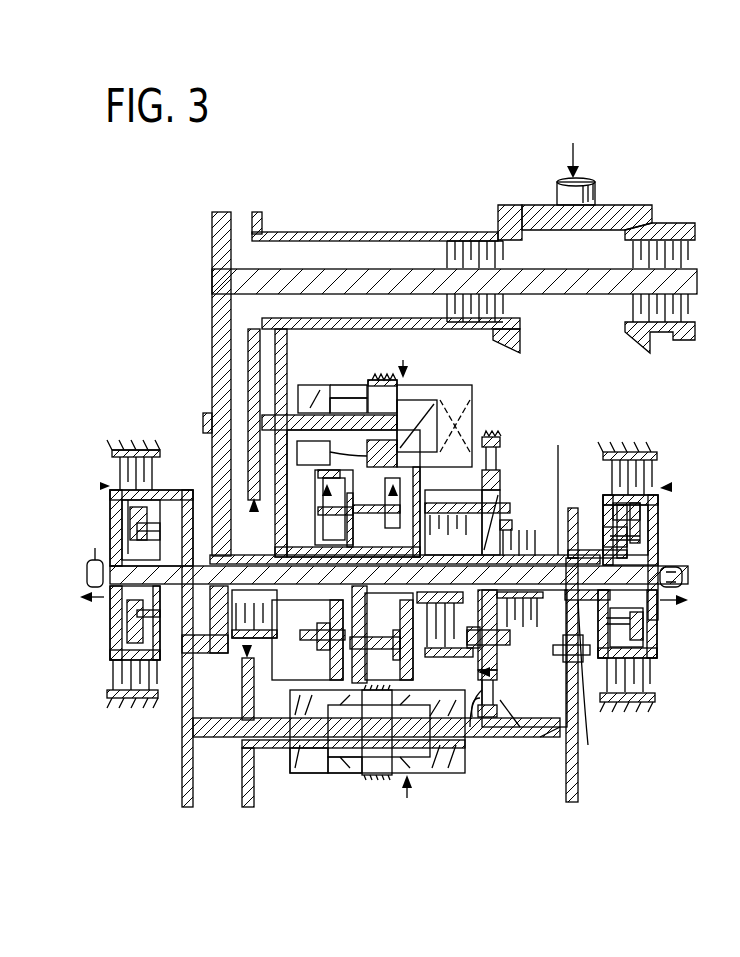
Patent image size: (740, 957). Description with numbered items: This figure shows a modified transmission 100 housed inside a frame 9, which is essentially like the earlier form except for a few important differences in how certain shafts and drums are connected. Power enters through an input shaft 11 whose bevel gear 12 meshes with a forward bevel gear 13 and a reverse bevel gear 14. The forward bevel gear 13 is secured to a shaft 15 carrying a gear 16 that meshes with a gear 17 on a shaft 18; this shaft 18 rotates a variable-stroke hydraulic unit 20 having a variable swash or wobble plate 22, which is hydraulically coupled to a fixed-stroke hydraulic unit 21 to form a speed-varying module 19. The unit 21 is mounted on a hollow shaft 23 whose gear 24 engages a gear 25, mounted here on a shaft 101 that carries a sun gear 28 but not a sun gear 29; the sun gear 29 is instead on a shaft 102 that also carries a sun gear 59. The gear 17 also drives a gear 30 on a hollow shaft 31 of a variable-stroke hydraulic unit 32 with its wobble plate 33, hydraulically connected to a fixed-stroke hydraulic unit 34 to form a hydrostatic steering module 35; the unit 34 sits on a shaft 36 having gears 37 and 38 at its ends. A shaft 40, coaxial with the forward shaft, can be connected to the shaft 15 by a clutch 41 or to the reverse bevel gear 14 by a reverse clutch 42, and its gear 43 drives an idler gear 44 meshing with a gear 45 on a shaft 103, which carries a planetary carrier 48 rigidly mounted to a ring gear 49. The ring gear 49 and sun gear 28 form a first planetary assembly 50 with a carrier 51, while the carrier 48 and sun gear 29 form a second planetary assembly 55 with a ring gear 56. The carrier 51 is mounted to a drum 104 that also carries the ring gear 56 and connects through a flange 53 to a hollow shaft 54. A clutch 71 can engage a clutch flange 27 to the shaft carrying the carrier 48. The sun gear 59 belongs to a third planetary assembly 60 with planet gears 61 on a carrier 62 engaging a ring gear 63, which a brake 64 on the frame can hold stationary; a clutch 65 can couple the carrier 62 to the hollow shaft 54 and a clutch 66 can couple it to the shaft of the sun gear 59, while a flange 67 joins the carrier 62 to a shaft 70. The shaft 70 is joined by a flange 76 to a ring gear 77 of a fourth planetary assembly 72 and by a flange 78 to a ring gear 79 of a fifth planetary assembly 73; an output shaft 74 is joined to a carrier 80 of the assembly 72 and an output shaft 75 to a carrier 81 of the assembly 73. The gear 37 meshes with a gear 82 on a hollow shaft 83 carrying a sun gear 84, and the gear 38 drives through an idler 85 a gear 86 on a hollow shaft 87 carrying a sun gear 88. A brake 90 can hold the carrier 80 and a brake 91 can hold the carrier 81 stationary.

The transmission 100 is at (330, 160).
The input shaft 11 is at (590, 180).
The bevel gear 12 is at (605, 214).
The bevel gear 13 is at (500, 212).
The bevel gear 14 is at (650, 214).
The shaft 15 is at (388, 232).
The gear 16 is at (262, 220).
The shaft 40 is at (378, 270).
The clutch 41 is at (496, 260).
The reverse clutch 42 is at (686, 258).
The gear 43 is at (212, 230).
The idler gear 44 is at (213, 360).
The gear 17 is at (266, 420).
The gear 24 is at (287, 358).
The hollow shaft 23 is at (293, 395).
The fixed-stroke hydraulic unit 21 is at (352, 398).
The speed-varying module 19 is at (408, 367).
The variable-stroke hydraulic unit 20 is at (424, 402).
The variable swash or wobble plate 22 is at (458, 400).
The shaft 18 is at (382, 393).
The drum 104 is at (417, 426).
The frame 9 is at (490, 436).
The brake 64 is at (498, 437).
The flange 67 is at (568, 490).
The shaft 70 is at (572, 510).
The brake 90 is at (112, 466).
The ring gear 77 is at (142, 520).
The planetary assembly 72 is at (100, 486).
The carrier 80 is at (154, 525).
The flange 76 is at (122, 520).
The output shaft 74 is at (95, 548).
The ring gear 56 is at (347, 453).
The ring gear 49 is at (328, 470).
The first planetary assembly 50 is at (320, 494).
The carrier 51 is at (328, 520).
The sun gear 29 is at (350, 540).
The second planetary assembly 55 is at (400, 488).
The flange 53 is at (500, 500).
The clutch 65 is at (490, 513).
The ring gear 79 is at (620, 510).
The planetary assembly 73 is at (672, 487).
The gear 86 is at (622, 520).
The flange 78 is at (627, 538).
The carrier 81 is at (615, 545).
The output shaft 75 is at (682, 577).
The shaft 102 is at (694, 599).
The sun gear 59 is at (640, 614).
The sun gear 88 is at (643, 640).
The clutch 66 is at (515, 640).
The sun gear 84 is at (137, 613).
The hollow shaft 83 is at (128, 632).
The gear 45 is at (222, 630).
The clutch flange 27 is at (242, 670).
The gear 25 is at (250, 660).
The clutch 71 is at (318, 632).
The shaft 101 is at (320, 636).
The sun gear 28 is at (345, 676).
The planetary carrier 48 is at (437, 658).
The third planetary assembly 60 is at (498, 672).
The carrier 62 is at (510, 672).
The planet gears 61 is at (497, 690).
The brake 91 is at (648, 672).
The shaft 103 is at (190, 650).
The gear 82 is at (182, 640).
The gear 37 is at (182, 795).
The hollow shaft 31 is at (284, 748).
The variable swash or wobble plate 33 is at (312, 773).
The variable-stroke hydraulic unit 32 is at (352, 773).
The fixed-stroke hydraulic unit 34 is at (430, 745).
The hollow shaft 54 is at (488, 718).
The ring gear 63 is at (510, 727).
The shaft 36 is at (558, 728).
The hydrostatic steering module 35 is at (419, 793).
The gear 30 is at (254, 808).
The gear 38 is at (578, 773).
The idler 85 is at (596, 681).
The hollow shaft 87 is at (690, 600).